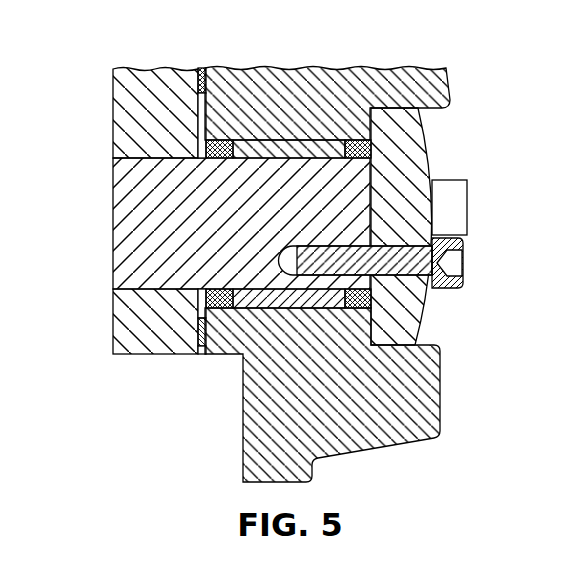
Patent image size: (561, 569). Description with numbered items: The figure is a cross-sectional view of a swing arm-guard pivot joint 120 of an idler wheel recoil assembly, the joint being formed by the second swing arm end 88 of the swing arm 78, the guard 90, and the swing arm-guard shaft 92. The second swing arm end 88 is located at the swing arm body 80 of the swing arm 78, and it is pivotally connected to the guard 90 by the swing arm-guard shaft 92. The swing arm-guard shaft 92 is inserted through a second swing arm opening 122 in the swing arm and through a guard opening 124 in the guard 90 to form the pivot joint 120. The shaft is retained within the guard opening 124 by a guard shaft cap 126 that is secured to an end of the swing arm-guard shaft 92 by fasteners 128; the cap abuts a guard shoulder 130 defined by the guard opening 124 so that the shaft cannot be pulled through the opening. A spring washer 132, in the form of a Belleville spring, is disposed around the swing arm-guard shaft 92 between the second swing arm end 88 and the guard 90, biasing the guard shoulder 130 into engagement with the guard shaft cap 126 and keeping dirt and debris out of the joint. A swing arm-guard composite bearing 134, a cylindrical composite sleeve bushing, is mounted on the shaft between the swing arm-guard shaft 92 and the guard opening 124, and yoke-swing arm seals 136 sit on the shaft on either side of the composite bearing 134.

The swing arm-guard pivot joint 120 is at (111, 107).
The second swing arm opening 122 is at (160, 162).
The swing arm 78 is at (132, 339).
The swing arm body 80 is at (132, 339).
The second swing arm end 88 is at (138, 332).
The swing arm-guard shaft 92 is at (150, 248).
The spring washer 132 is at (204, 67).
The guard shoulder 130 is at (363, 130).
The guard opening 124 is at (297, 140).
The guard shaft cap 126 is at (417, 155).
The guard 90 is at (392, 440).
The swing arm-guard composite bearing 134 is at (297, 305).
The yoke-swing arm seals 136 is at (223, 307).
The fasteners 128 is at (453, 207).